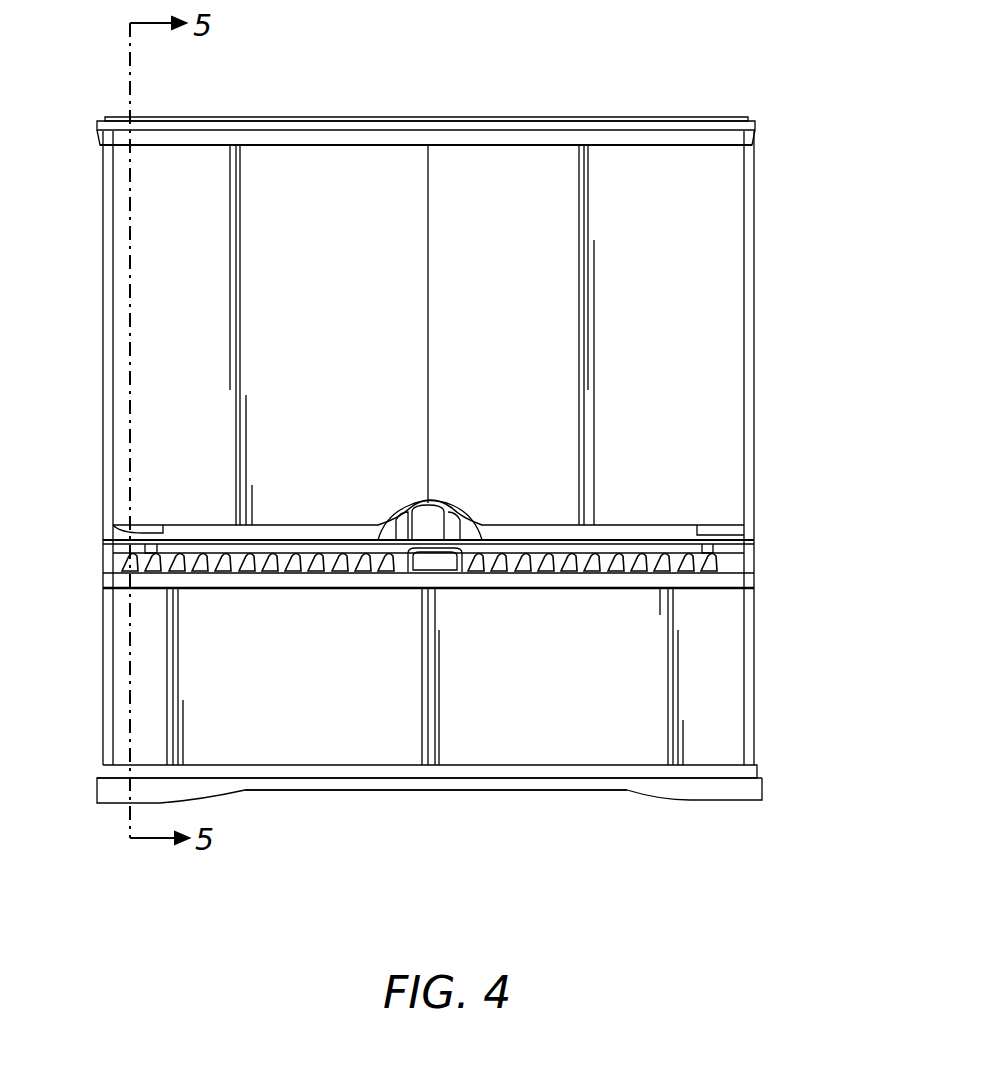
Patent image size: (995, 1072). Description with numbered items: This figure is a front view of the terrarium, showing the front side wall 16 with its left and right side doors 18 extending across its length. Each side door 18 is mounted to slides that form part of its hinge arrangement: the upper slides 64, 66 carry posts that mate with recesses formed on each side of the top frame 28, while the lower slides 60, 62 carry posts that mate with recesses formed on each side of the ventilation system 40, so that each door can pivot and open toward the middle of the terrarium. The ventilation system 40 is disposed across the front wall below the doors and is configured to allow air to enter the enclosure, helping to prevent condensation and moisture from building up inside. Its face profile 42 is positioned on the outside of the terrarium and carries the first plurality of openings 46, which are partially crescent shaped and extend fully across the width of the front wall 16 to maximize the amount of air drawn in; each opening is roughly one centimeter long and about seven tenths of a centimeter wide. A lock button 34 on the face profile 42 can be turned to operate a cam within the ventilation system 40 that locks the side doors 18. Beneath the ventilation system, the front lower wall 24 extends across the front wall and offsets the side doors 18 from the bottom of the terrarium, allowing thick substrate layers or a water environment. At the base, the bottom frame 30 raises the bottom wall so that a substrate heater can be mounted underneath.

The front side wall 16 is at (722, 690).
The side door 18 is at (152, 334).
The front lower wall 24 is at (500, 728).
The top frame 28 is at (755, 135).
The bottom frame 30 is at (758, 766).
The lock button 34 is at (420, 576).
The ventilation system 40 is at (548, 585).
The face profile 42 is at (600, 550).
The first plurality of openings 46 is at (217, 570).
The lower slide 60 is at (358, 521).
The lower slide 62 is at (478, 516).
The upper slide 64 is at (383, 146).
The upper slide 66 is at (556, 146).